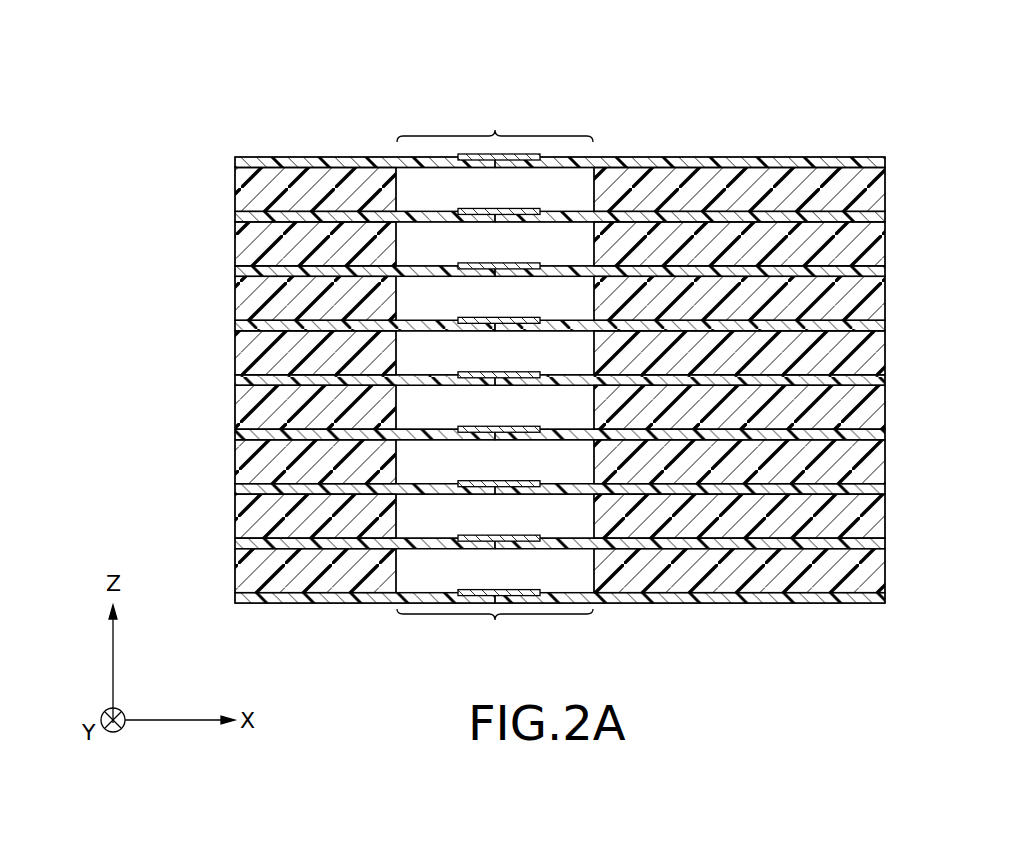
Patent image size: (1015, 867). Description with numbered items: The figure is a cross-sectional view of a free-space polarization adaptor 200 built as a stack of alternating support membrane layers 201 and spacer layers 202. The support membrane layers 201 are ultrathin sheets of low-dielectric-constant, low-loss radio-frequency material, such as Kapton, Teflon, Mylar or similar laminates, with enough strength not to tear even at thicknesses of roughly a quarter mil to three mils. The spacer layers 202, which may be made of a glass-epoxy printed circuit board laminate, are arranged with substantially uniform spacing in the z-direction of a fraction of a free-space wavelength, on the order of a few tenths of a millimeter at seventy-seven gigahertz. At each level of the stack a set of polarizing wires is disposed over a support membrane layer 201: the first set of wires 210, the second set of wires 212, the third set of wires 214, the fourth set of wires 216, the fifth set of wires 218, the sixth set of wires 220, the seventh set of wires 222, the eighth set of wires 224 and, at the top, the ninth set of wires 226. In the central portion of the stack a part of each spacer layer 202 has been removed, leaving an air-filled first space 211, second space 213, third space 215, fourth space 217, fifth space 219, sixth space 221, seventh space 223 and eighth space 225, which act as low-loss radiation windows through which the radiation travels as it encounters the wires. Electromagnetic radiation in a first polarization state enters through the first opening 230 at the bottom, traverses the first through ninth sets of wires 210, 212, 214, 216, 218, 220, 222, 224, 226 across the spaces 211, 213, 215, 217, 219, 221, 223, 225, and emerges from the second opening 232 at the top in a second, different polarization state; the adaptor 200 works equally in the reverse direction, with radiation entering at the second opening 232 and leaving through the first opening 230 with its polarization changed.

The free-space polarization adaptor 200 is at (583, 82).
The support membrane layers 201 is at (885, 159).
The spacer layers 202 is at (885, 244).
The first set of wires 210 is at (492, 583).
The first space 211 is at (443, 581).
The second set of wires 212 is at (492, 528).
The second space 213 is at (443, 527).
The third set of wires 214 is at (492, 474).
The third space 215 is at (443, 472).
The fourth set of wires 216 is at (492, 419).
The fourth space 217 is at (443, 418).
The fifth set of wires 218 is at (492, 365).
The fifth space 219 is at (443, 363).
The sixth set of wires 220 is at (492, 310).
The sixth space 221 is at (443, 309).
The seventh set of wires 222 is at (492, 256).
The seventh space 223 is at (443, 254).
The eighth set of wires 224 is at (492, 202).
The eighth space 225 is at (443, 200).
The ninth set of wires 226 is at (523, 154).
The first opening 230 is at (495, 632).
The second opening 232 is at (495, 121).